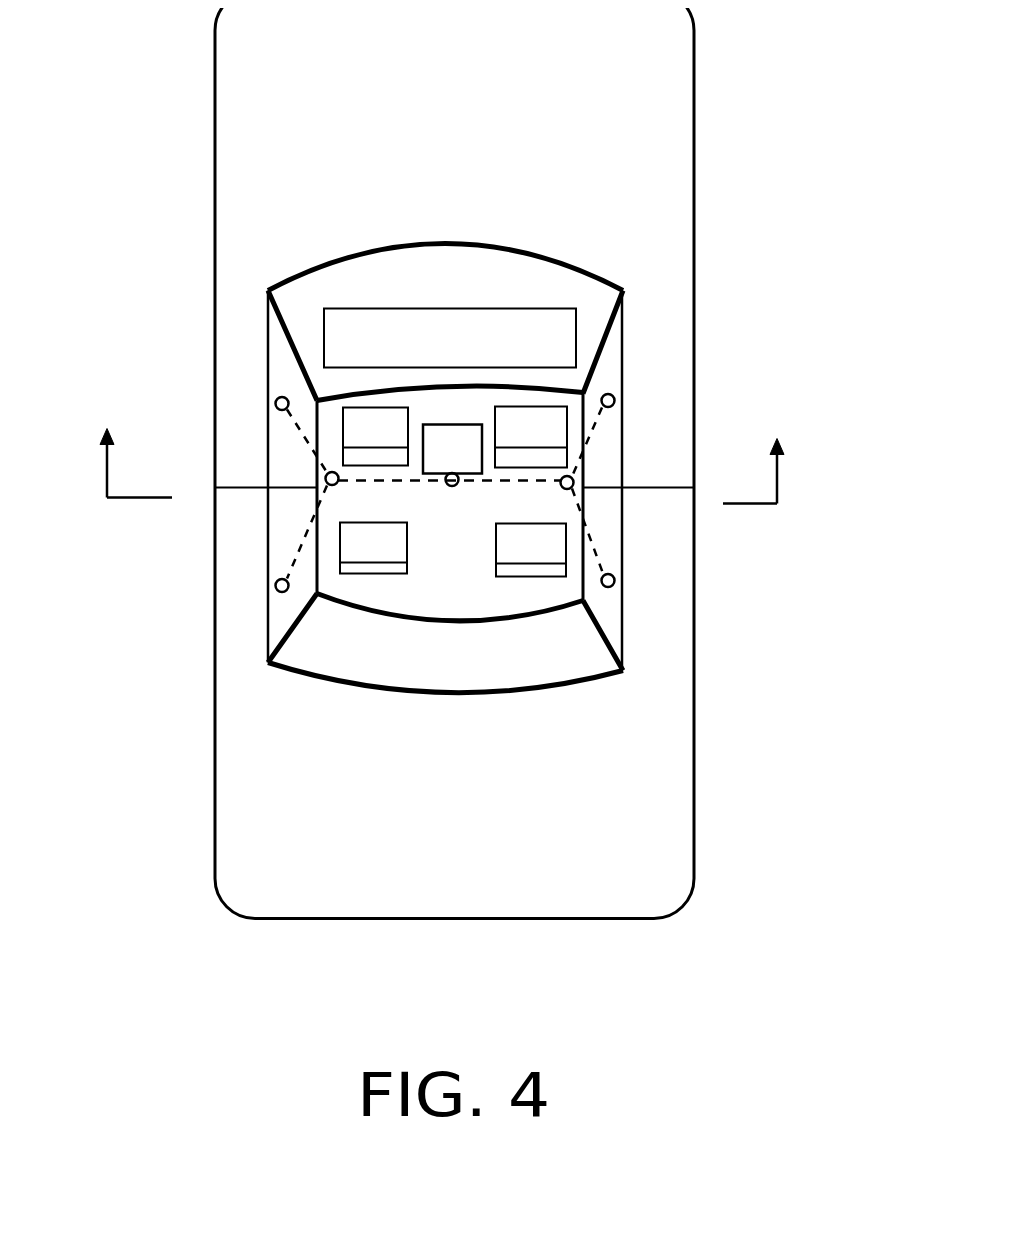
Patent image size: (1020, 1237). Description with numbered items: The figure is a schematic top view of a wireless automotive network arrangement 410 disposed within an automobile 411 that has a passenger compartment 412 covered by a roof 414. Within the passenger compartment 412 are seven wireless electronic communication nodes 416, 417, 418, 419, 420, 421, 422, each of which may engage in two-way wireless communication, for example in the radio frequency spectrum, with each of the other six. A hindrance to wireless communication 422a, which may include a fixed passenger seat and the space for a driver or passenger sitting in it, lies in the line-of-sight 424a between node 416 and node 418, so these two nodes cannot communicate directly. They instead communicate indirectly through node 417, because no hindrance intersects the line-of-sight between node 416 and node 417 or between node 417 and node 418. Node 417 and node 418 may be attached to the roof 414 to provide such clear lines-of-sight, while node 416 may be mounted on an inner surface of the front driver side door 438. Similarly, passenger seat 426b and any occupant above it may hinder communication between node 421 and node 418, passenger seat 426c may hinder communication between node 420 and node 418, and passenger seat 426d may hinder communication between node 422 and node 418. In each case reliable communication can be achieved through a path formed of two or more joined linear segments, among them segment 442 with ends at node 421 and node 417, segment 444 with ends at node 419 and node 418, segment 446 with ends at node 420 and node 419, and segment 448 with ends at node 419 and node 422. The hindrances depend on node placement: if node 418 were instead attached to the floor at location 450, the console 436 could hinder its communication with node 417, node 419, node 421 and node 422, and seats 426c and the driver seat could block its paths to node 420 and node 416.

The wireless automotive network arrangement 410 is at (157, 952).
The automobile 411 is at (215, 68).
The passenger compartment 412 is at (313, 663).
The roof 414 is at (530, 607).
The wireless electronic communication node 416 is at (276, 400).
The wireless electronic communication node 417 is at (325, 476).
The wireless electronic communication node 418 is at (448, 488).
The wireless electronic communication node 419 is at (575, 481).
The wireless electronic communication node 420 is at (614, 399).
The wireless electronic communication node 421 is at (276, 587).
The wireless electronic communication node 422 is at (614, 581).
The hindrance to wireless communication 422a is at (372, 420).
The line-of-sight 424a is at (388, 452).
The passenger seat 426b is at (378, 562).
The passenger seat 426c is at (543, 423).
The passenger seat 426d is at (522, 552).
The console 436 is at (478, 450).
The front driver side door 438 is at (267, 345).
The segment 442 is at (297, 552).
The segment 444 is at (503, 483).
The segment 446 is at (593, 441).
The segment 448 is at (593, 547).
The location 450 is at (456, 420).